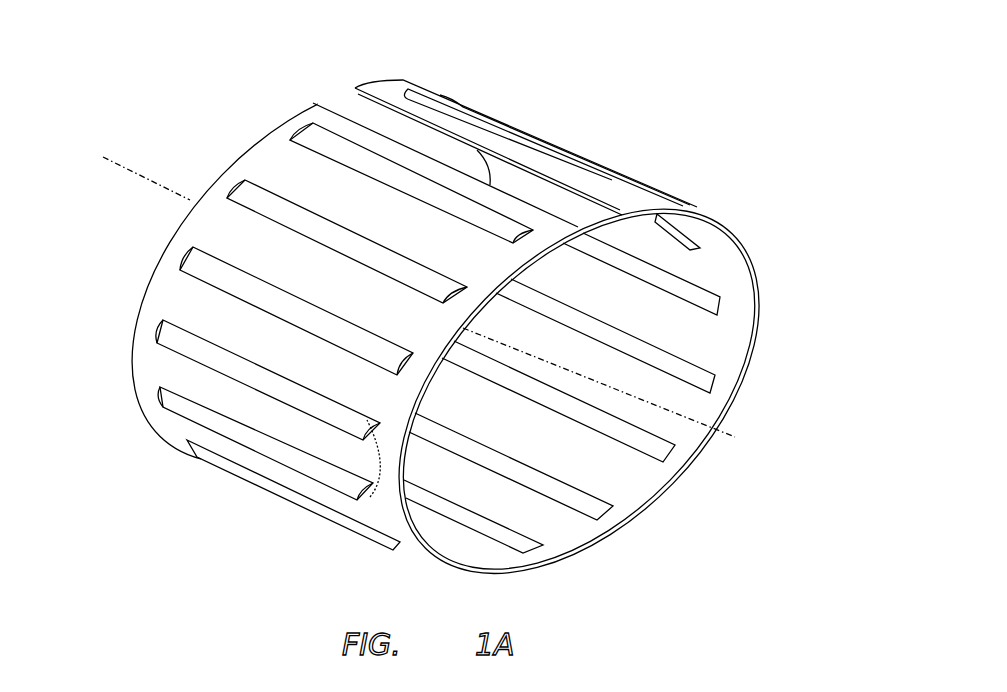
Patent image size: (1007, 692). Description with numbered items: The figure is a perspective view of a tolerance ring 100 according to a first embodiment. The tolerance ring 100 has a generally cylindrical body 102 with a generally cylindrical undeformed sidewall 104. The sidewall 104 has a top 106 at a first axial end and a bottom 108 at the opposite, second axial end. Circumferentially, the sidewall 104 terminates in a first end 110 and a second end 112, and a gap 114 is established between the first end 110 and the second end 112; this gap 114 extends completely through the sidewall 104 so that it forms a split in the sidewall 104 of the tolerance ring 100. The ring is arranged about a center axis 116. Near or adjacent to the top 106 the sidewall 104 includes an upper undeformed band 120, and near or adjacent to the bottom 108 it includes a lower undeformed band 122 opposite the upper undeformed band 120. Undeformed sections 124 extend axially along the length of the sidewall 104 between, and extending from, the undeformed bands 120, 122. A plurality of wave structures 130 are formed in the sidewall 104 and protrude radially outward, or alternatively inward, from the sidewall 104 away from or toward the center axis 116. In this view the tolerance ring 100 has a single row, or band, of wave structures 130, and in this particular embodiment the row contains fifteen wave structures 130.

The tolerance ring 100 is at (742, 117).
The cylindrical body 102 is at (727, 380).
The sidewall 104 is at (290, 115).
The top 106 is at (650, 512).
The bottom 108 is at (143, 278).
The first end 110 is at (323, 101).
The second end 112 is at (353, 92).
The gap 114 is at (612, 226).
The center axis 116 is at (745, 466).
The upper undeformed band 120 is at (377, 492).
The lower undeformed band 122 is at (158, 326).
The undeformed sections 124 is at (270, 185).
The wave structures 130 is at (182, 408).